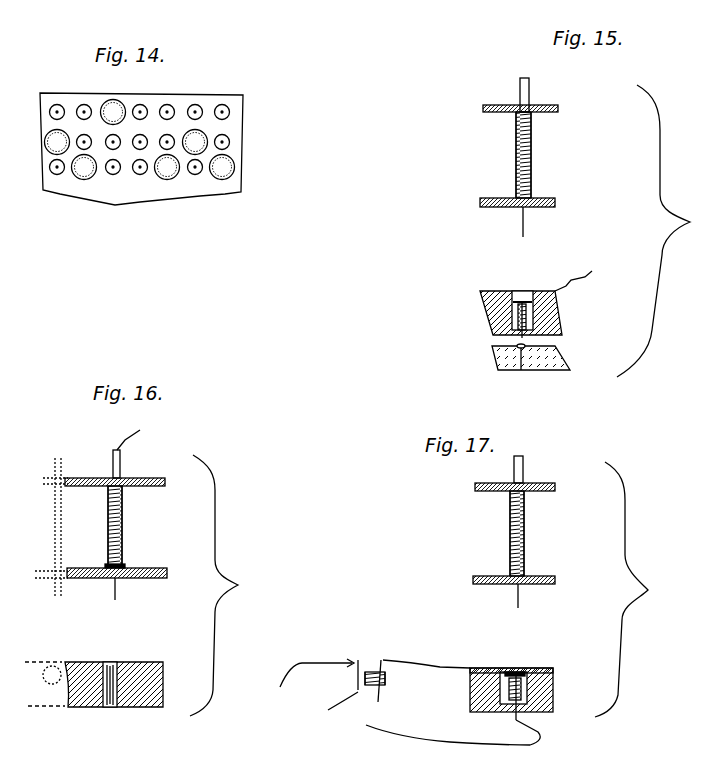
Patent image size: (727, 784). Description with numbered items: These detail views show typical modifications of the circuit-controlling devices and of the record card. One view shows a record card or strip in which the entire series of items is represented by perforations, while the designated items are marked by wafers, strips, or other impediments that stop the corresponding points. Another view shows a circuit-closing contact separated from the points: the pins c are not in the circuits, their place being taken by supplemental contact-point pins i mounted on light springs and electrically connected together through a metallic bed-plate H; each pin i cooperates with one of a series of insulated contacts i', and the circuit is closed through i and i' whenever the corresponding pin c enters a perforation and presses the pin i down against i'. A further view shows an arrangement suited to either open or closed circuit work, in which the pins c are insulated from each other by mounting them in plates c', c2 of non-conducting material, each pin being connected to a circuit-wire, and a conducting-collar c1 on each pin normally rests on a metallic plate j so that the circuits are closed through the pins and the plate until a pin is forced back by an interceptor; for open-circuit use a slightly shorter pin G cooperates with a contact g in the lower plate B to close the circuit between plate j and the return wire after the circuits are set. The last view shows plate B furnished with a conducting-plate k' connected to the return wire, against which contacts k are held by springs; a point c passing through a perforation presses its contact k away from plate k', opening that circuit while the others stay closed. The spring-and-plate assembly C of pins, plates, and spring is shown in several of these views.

In FIG. 14, the contact k is at (140, 140).
In FIG. 17, the contact k is at (515, 679).
In FIG. 17, the conducting-plate k' is at (507, 656).
In FIG. 15, the spring rod assembly C is at (507, 138).
In FIG. 16, the spring rod assembly C is at (102, 498).
In FIG. 17, the spring rod assembly C is at (501, 516).
In FIG. 15, the plate c' is at (511, 102).
In FIG. 16, the plate c' is at (126, 478).
In FIG. 17, the plate c' is at (503, 483).
In FIG. 15, the plate c2 is at (506, 199).
In FIG. 16, the plate c2 is at (168, 572).
In FIG. 17, the plate c2 is at (505, 575).
In FIG. 16, the collar c1 is at (126, 568).
In FIG. 15, the pin c is at (530, 222).
In FIG. 16, the pin c is at (122, 590).
In FIG. 17, the pin c is at (525, 596).
In FIG. 15, the metallic bed-plate H is at (479, 311).
In FIG. 15, the supplemental contact-point pin i is at (523, 304).
In FIG. 15, the insulated contact i' is at (527, 366).
In FIG. 16, the pin G is at (55, 518).
In FIG. 16, the metallic plate j is at (51, 573).
In FIG. 16, the contact g is at (54, 666).
In FIG. 16, the lower plate B is at (90, 684).
In FIG. 17, the lower plate B is at (500, 690).